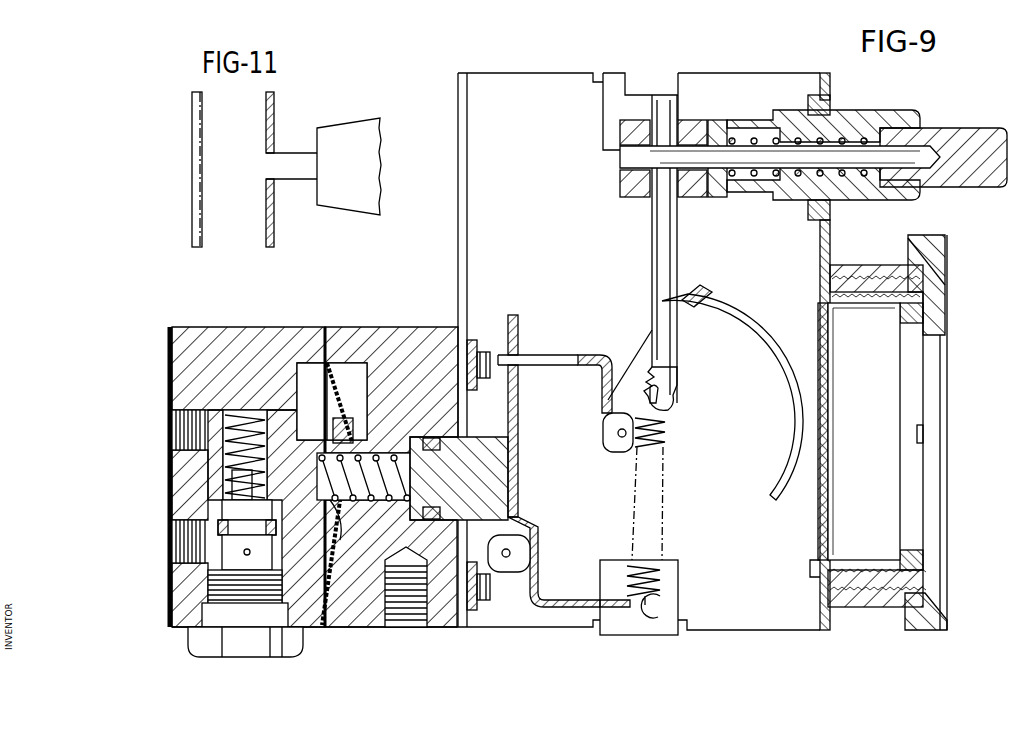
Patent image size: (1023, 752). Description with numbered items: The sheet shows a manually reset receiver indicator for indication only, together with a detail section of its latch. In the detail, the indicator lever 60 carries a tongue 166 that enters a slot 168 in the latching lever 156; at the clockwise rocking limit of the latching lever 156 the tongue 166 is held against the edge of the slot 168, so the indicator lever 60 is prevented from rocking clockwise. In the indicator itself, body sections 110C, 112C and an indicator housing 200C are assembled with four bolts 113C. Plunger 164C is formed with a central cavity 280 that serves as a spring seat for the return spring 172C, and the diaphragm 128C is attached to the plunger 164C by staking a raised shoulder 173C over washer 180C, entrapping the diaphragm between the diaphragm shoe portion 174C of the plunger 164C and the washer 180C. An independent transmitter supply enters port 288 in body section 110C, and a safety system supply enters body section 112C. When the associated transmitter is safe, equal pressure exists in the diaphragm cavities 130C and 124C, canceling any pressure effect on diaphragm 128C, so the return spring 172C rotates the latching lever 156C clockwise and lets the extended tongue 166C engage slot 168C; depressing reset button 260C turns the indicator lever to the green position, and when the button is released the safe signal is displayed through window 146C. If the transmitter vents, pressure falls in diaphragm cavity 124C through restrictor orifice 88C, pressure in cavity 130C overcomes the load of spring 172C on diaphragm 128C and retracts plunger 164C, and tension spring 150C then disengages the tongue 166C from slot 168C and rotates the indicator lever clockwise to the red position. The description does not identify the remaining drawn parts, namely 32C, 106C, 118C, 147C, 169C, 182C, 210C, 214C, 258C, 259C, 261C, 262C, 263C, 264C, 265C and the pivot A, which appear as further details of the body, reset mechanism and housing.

In FIG. 11, the indicator lever 60 is at (370, 178).
In FIG. 11, the latching lever 156 is at (190, 240).
In FIG. 11, the tongue 166 is at (290, 160).
In FIG. 11, the slot 168 is at (266, 185).
In FIG. 9, the inlet port 32C is at (180, 428).
In FIG. 9, the restrictor orifice 88C is at (172, 590).
In FIG. 9, the valve member 106C is at (205, 510).
In FIG. 9, the body section 110C is at (258, 345).
In FIG. 9, the body section 112C is at (372, 345).
In FIG. 9, the bolts 113C is at (172, 355).
In FIG. 9, the spring 118C is at (240, 415).
In FIG. 9, the diaphragm cavity 124C is at (300, 387).
In FIG. 9, the diaphragm 128C is at (320, 575).
In FIG. 9, the diaphragm cavity 130C is at (358, 392).
In FIG. 9, the window 146C is at (865, 410).
In FIG. 9, the wall 147C is at (828, 480).
In FIG. 9, the tension spring 150C is at (665, 540).
In FIG. 9, the latching lever 156C is at (515, 505).
In FIG. 9, the plunger 164C is at (495, 480).
In FIG. 9, the extended tongue 166C is at (528, 360).
In FIG. 9, the slot 168C is at (513, 397).
In FIG. 9, the plate portion 169C is at (518, 340).
In FIG. 9, the return spring 172C is at (410, 470).
In FIG. 9, the raised shoulder 173C is at (330, 535).
In FIG. 9, the diaphragm shoe portion 174C is at (348, 627).
In FIG. 9, the washer 180C is at (363, 477).
In FIG. 9, the adjusting nut 182C is at (235, 650).
In FIG. 9, the indicator housing 200C is at (745, 620).
In FIG. 9, the end wall 210C is at (910, 628).
In FIG. 9, the end wall 214C is at (930, 312).
In FIG. 9, the spring housing 258C is at (868, 205).
In FIG. 9, the flange 259C is at (830, 100).
In FIG. 9, the reset button 260C is at (975, 138).
In FIG. 9, the rod 261C is at (925, 168).
In FIG. 9, the spring 262C is at (880, 135).
In FIG. 9, the guide block 263C is at (620, 148).
In FIG. 9, the rod 264C is at (665, 250).
In FIG. 9, the connection 265C is at (703, 285).
In FIG. 9, the central cavity 280 is at (390, 442).
In FIG. 9, the port 288 is at (180, 540).
In FIG. 9, the lever A is at (614, 338).